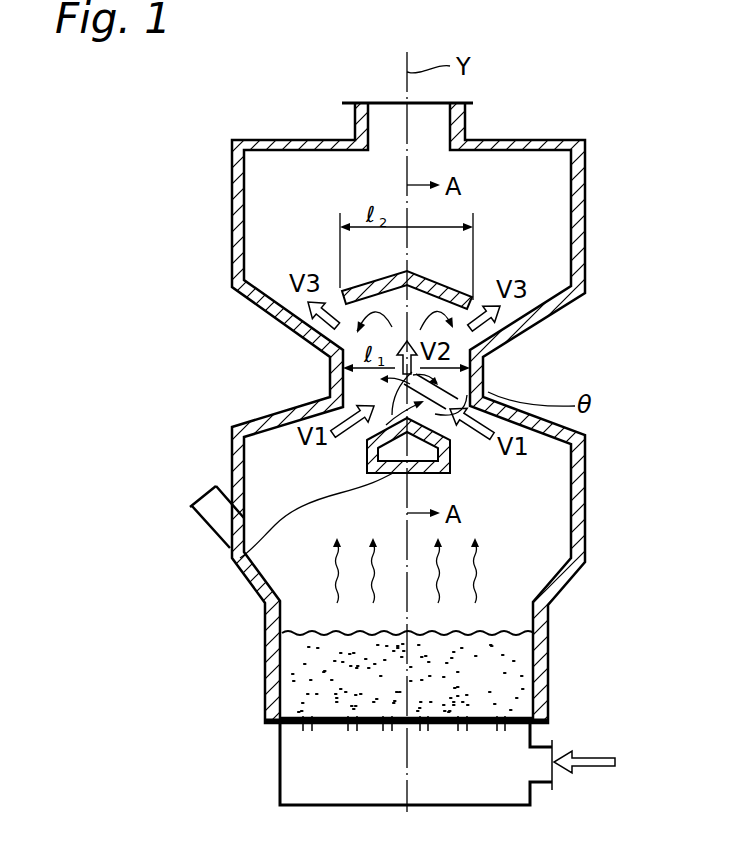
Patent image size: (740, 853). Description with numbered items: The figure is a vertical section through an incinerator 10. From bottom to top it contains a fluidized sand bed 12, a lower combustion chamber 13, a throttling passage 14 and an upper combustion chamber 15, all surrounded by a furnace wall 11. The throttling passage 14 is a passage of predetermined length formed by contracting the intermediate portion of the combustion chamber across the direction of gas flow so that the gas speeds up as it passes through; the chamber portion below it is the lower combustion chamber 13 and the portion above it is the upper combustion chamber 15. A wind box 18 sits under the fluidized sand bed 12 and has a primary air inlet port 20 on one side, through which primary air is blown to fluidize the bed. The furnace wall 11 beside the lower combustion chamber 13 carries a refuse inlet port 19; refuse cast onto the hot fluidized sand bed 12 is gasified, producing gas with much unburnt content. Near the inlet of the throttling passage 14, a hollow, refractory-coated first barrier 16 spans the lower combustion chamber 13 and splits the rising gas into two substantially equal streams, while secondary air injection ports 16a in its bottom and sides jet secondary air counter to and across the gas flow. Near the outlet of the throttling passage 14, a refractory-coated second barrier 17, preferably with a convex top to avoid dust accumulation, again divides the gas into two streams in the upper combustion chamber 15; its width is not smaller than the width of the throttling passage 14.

The incinerator 10 is at (380, 413).
The furnace wall 11 is at (553, 588).
The fluidized sand bed 12 is at (492, 670).
The lower combustion chamber 13 is at (532, 517).
The throttling passage 14 is at (455, 393).
The upper combustion chamber 15 is at (550, 188).
The first barrier 16 is at (453, 473).
The secondary air injection ports 16a is at (228, 562).
The second barrier 17 is at (460, 292).
The wind box 18 is at (498, 790).
The refuse inlet port 19 is at (200, 488).
The primary air inlet port 20 is at (556, 752).